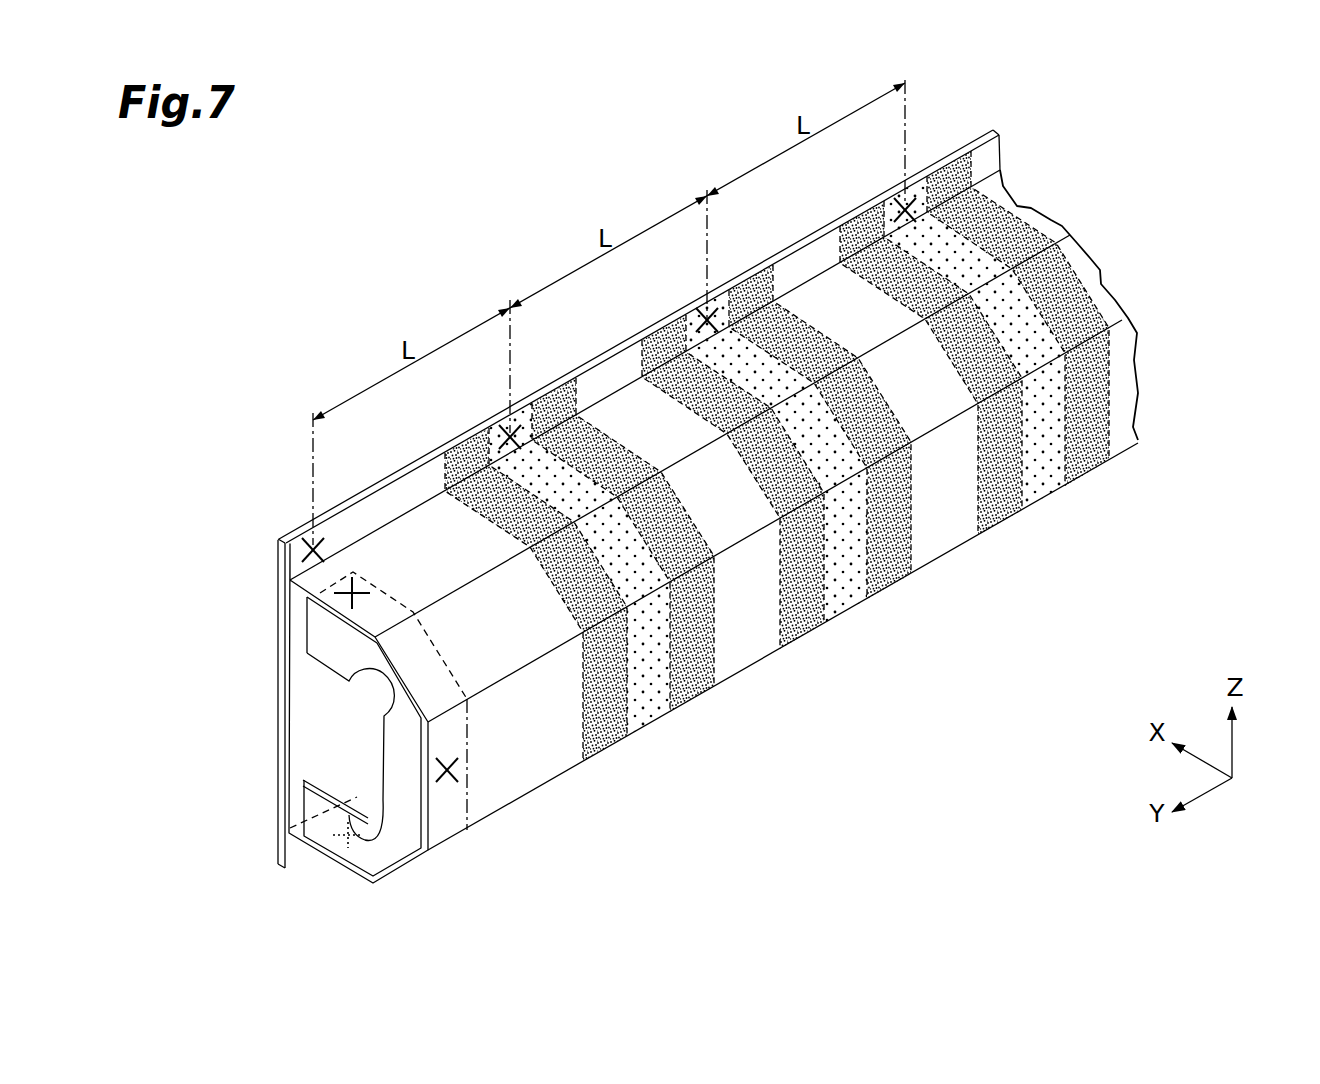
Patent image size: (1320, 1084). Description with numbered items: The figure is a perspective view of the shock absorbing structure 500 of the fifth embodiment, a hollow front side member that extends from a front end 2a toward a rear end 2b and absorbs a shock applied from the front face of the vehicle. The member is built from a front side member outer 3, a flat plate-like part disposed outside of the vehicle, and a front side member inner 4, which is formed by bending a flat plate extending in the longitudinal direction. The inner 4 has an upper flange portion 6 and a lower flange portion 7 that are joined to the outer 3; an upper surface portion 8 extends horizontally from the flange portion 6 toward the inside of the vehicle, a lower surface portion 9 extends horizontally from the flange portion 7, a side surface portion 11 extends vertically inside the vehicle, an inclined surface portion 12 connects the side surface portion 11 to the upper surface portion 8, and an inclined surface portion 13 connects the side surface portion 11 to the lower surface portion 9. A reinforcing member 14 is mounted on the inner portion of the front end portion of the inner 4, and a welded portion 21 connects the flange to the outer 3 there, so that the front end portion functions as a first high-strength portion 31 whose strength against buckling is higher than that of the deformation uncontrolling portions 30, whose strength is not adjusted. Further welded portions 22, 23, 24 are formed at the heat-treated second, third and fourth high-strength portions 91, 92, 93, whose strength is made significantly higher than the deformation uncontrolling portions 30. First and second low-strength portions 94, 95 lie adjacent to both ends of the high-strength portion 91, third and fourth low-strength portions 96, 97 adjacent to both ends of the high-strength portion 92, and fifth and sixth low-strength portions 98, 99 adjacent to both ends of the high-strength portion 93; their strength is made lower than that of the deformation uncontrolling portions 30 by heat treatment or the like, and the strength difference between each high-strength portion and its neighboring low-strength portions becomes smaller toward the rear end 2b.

The shock absorbing structure 500 is at (444, 193).
The front side member inner 4 is at (1168, 232).
The front side member outer 3 is at (279, 672).
The first high-strength portion 31 is at (281, 531).
The front end 2a is at (281, 745).
The flange portion 6 is at (992, 158).
The upper surface portion 8 is at (1027, 208).
The deformation uncontrolling portions 30 is at (415, 528).
The rear end 2b is at (1117, 297).
The side surface portion 11 is at (1122, 383).
The inclined surface portion 12 is at (1082, 262).
The reinforcing member 14 is at (390, 757).
The lower surface portion 9 is at (340, 870).
The flange portion 7 is at (298, 853).
The inclined surface portion 13 is at (410, 868).
The welded portion 21 is at (303, 560).
The welded portion 22 is at (502, 428).
The welded portion 23 is at (700, 306).
The welded portion 24 is at (898, 200).
The second high-strength portion 91 is at (645, 710).
The third high-strength portion 92 is at (845, 595).
The fourth high-strength portion 93 is at (1047, 475).
The first low-strength portion 94 is at (460, 462).
The second low-strength portion 95 is at (560, 405).
The third low-strength portion 96 is at (665, 340).
The fourth low-strength portion 97 is at (752, 283).
The fifth low-strength portion 98 is at (860, 225).
The sixth low-strength portion 99 is at (952, 175).